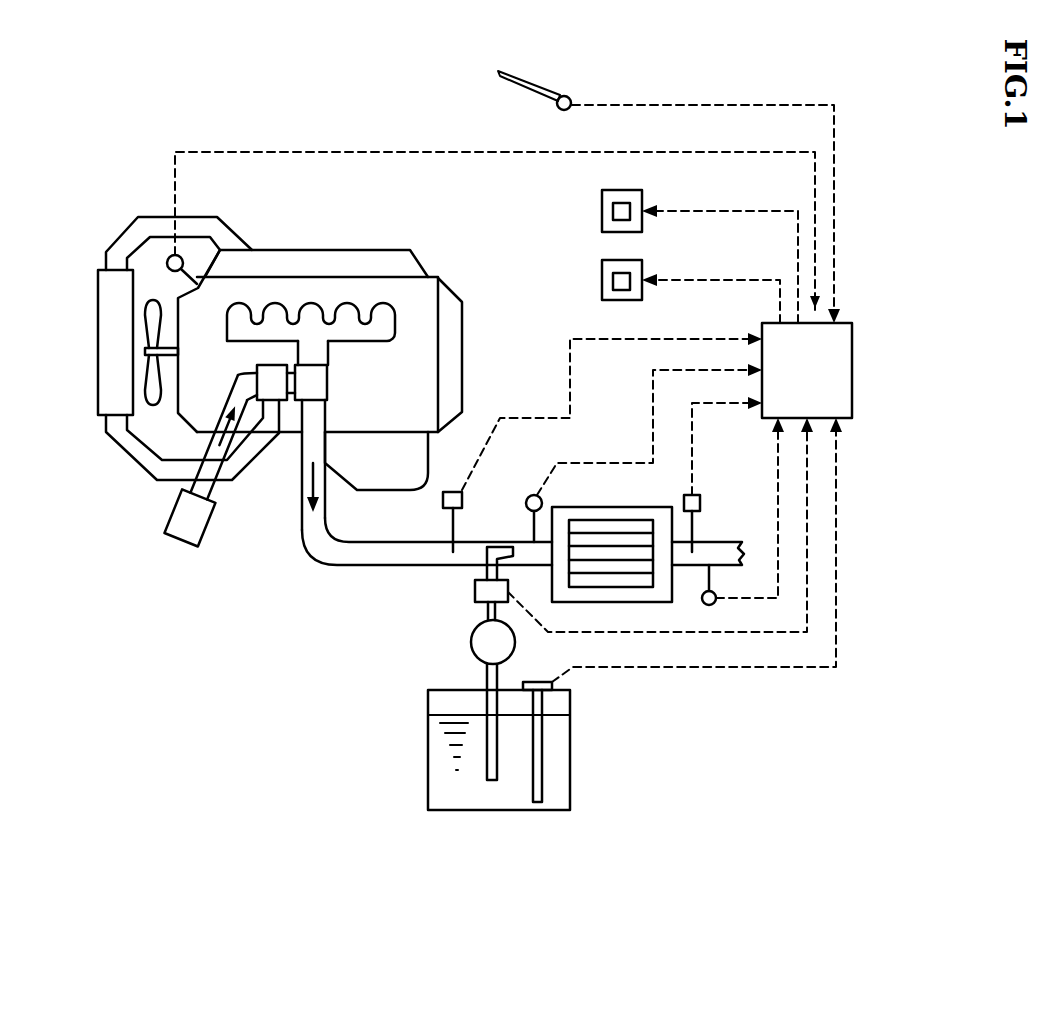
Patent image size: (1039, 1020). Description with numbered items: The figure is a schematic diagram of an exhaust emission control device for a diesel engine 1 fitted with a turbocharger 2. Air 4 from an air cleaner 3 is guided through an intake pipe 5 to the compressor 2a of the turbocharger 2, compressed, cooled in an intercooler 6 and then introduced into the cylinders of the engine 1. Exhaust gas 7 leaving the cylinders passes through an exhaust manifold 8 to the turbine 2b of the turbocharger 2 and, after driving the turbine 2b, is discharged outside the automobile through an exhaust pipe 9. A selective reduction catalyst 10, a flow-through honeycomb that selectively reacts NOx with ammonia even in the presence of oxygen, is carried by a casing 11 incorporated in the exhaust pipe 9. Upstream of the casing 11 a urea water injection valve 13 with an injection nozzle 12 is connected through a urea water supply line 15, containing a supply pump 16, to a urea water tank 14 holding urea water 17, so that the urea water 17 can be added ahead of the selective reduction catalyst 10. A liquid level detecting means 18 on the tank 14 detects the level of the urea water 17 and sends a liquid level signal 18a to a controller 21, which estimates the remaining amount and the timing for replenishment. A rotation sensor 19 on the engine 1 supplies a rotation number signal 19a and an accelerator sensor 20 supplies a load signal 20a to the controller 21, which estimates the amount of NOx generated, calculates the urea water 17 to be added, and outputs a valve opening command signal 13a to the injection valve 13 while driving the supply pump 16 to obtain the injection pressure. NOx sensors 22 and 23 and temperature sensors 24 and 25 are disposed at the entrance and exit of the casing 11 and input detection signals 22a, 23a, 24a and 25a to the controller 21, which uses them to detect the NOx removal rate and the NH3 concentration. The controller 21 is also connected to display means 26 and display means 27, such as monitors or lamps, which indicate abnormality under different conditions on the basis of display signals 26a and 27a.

The engine 1 is at (418, 295).
The turbocharger 2 is at (338, 377).
The compressor 2a is at (272, 378).
The turbine 2b is at (315, 378).
The air cleaner 3 is at (178, 525).
The air 4 is at (213, 448).
The intake pipe 5 is at (135, 463).
The intercooler 6 is at (108, 293).
The exhaust gas 7 is at (303, 492).
The exhaust manifold 8 is at (390, 328).
The exhaust pipe 9 is at (330, 571).
The selective reduction catalyst 10 is at (588, 543).
The casing 11 is at (628, 505).
The injection nozzle 12 is at (512, 545).
The urea water injection valve 13 is at (475, 592).
The valve opening command signal 13a is at (590, 634).
The urea water tank 14 is at (572, 790).
The urea water supply line 15 is at (485, 615).
The supply pump 16 is at (470, 655).
The urea water 17 is at (465, 787).
The liquid level detecting means 18 is at (544, 742).
The liquid level signal 18a is at (698, 670).
The rotation sensor 19 is at (168, 256).
The rotation number signal 19a is at (292, 150).
The accelerator sensor 20 is at (572, 100).
The load signal 20a is at (792, 104).
The controller 21 is at (855, 375).
The NOx sensor 22 is at (454, 490).
The detection signal 22a is at (555, 382).
The NOx sensor 23 is at (701, 502).
The detection signal 23a is at (694, 465).
The temperature sensor 24 is at (536, 494).
The detection signal 24a is at (650, 408).
The temperature sensor 25 is at (707, 608).
The detection signal 25a is at (738, 596).
The display means 26 is at (602, 275).
The display signal 26a is at (722, 280).
The display means 27 is at (602, 207).
The display signal 27a is at (700, 210).